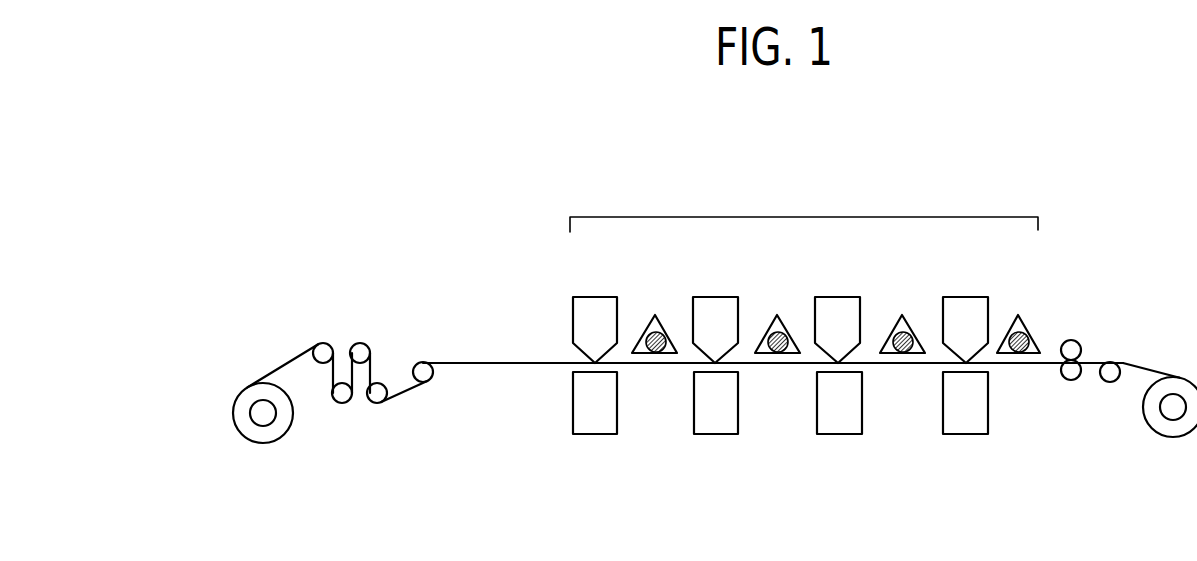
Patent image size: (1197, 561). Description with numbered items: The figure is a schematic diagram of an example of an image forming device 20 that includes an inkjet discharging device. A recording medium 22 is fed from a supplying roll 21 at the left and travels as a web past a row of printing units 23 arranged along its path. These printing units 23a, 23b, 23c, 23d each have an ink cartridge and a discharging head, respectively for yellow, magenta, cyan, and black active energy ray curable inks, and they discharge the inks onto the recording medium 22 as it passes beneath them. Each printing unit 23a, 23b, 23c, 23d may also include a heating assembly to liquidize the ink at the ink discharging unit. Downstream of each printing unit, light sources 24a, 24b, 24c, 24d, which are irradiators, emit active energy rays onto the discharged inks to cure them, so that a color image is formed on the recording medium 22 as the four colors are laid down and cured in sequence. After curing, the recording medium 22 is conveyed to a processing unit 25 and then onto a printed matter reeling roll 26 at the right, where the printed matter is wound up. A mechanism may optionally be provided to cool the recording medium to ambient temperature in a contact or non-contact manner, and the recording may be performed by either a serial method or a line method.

The image forming device 20 is at (1147, 162).
The supplying roll 21 is at (262, 420).
The recording medium 22 is at (478, 360).
The printing units 23 is at (792, 217).
The printing unit 23a is at (593, 308).
The printing unit 23b is at (713, 308).
The printing unit 23c is at (836, 308).
The printing unit 23d is at (964, 308).
The light source 24a is at (657, 322).
The light source 24b is at (776, 322).
The light source 24c is at (902, 322).
The light source 24d is at (1019, 322).
The processing unit 25 is at (1072, 330).
The printed matter reeling roll 26 is at (1167, 413).